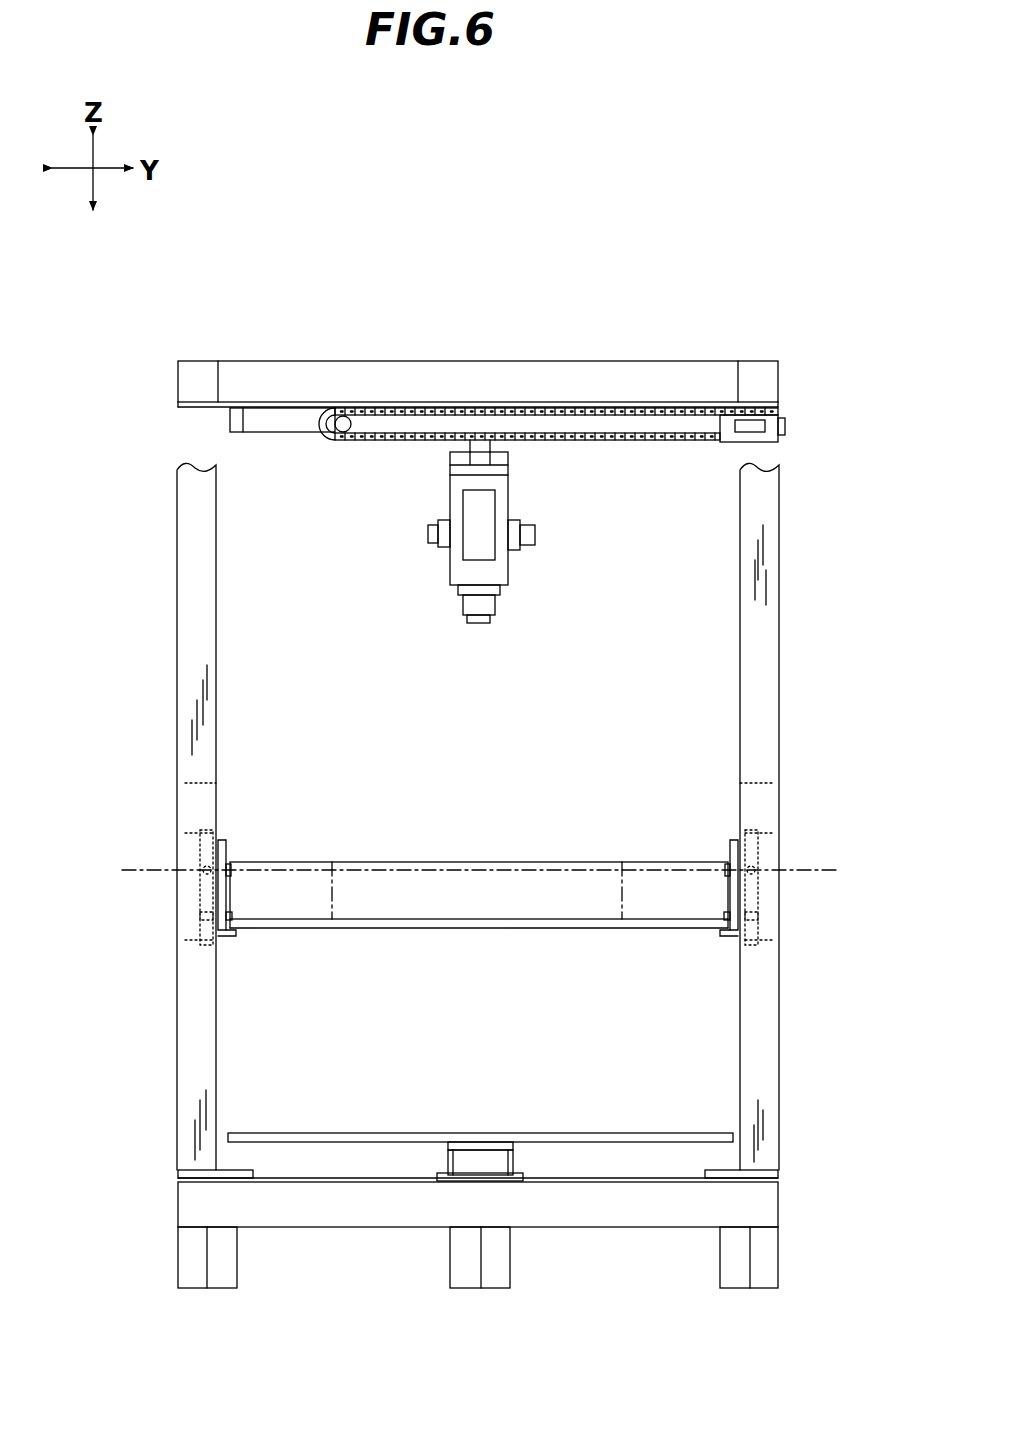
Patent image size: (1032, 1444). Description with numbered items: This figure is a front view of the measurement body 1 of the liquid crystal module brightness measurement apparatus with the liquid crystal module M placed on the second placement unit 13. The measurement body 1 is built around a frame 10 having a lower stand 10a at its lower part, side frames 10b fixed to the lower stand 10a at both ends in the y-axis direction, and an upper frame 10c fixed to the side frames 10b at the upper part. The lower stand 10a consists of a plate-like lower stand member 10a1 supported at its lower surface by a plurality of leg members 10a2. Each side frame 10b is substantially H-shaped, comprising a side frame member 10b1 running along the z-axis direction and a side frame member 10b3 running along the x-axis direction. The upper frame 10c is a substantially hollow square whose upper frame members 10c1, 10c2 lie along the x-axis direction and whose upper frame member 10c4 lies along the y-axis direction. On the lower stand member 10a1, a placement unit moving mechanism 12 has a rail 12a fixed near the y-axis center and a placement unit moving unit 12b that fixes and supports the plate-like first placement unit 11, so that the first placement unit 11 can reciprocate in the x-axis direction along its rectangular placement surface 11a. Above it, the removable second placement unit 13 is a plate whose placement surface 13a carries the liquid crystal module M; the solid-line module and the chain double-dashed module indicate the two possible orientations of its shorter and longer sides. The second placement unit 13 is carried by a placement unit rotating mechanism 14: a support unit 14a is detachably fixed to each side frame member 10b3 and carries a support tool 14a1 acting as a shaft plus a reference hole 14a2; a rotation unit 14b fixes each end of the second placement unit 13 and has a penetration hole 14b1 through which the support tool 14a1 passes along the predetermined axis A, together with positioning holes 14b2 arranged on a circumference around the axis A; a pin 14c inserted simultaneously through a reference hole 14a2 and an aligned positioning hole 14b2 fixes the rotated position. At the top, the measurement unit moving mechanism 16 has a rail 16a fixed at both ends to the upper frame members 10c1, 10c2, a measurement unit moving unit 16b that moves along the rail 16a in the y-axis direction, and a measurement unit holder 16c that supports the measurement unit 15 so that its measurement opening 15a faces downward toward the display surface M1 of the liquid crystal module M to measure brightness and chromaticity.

The measurement body 1 is at (614, 256).
The frame 10 is at (185, 358).
The lower stand 10a is at (176, 1186).
The lower stand member 10a1 is at (190, 1210).
The leg members 10a2 is at (195, 1290).
The side frames 10b is at (176, 560).
The side frame member 10b1 is at (205, 660).
The side frame member 10b3 is at (200, 795).
The upper frame 10c is at (745, 357).
The upper frame member 10c1 is at (197, 368).
The upper frame member 10c2 is at (762, 368).
The upper frame member 10c4 is at (590, 368).
The first placement unit 11 is at (480, 1110).
The placement surface 11a is at (342, 1135).
The placement unit moving mechanism 12 is at (479, 1180).
The rail 12a is at (523, 1166).
The placement unit moving unit 12b is at (465, 1145).
The second placement unit 13 is at (479, 898).
The placement surface 13a is at (455, 917).
The placement unit rotating mechanism 14 is at (484, 892).
The support unit 14a is at (205, 930).
The support tool 14a1 is at (208, 866).
The reference hole 14a2 is at (208, 925).
The rotation unit 14b is at (222, 936).
The penetration hole 14b1 is at (232, 860).
The positioning holes 14b2 is at (228, 930).
The pin 14c is at (208, 915).
The measurement unit 15 is at (497, 560).
The measurement opening 15a is at (478, 623).
The measurement unit moving mechanism 16 is at (507, 419).
The rail 16a is at (287, 420).
The measurement unit moving unit 16b is at (482, 445).
The measurement unit holder 16c is at (524, 540).
The predetermined axis A is at (466, 872).
The liquid crystal module M is at (551, 861).
The display surface M1 is at (636, 861).